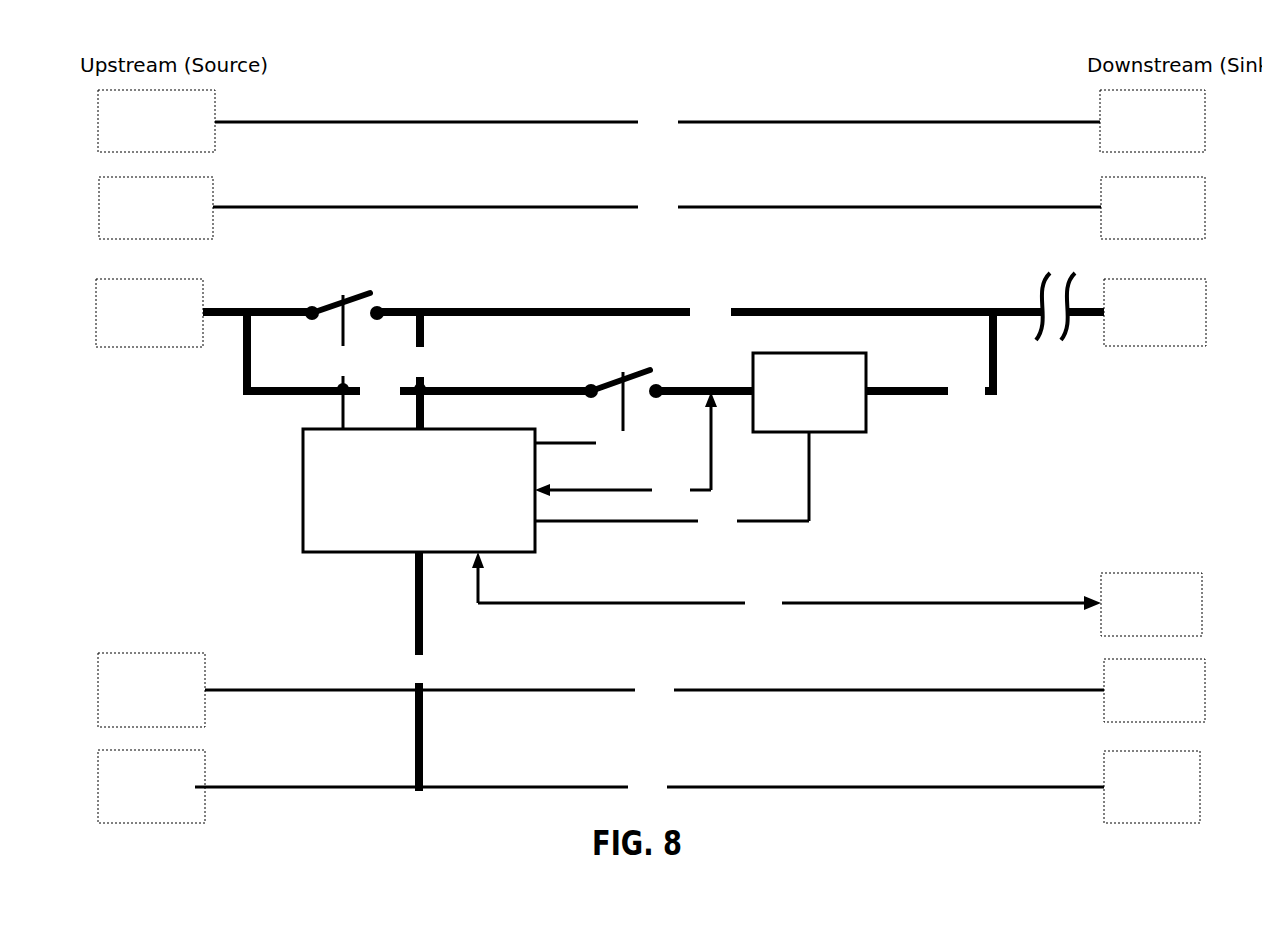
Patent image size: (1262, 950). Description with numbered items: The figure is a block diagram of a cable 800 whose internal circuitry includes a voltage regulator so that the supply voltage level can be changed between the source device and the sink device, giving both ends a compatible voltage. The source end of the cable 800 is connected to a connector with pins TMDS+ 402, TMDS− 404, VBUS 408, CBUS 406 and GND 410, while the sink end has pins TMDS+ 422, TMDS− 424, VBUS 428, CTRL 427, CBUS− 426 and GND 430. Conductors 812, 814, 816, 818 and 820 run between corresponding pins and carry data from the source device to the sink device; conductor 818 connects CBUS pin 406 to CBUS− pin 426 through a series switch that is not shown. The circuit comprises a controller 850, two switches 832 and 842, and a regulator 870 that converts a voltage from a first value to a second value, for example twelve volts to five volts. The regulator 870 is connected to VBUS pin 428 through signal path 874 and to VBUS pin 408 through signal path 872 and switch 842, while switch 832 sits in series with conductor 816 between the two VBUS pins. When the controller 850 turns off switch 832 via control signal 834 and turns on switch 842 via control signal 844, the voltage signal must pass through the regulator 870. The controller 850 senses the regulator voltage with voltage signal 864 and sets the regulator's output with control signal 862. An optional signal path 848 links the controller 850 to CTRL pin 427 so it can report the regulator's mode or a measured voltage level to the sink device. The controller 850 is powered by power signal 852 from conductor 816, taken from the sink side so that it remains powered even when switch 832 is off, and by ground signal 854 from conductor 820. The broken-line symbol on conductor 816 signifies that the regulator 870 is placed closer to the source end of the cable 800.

The cable 800 is at (1186, 14).
The TMDS+ pin 402 is at (156, 121).
The TMDS− pin 404 is at (156, 208).
The VBUS pin 408 is at (149, 313).
The CBUS pin 406 is at (151, 690).
The GND pin 410 is at (151, 786).
The TMDS+ pin 422 is at (1152, 121).
The TMDS− pin 424 is at (1153, 208).
The VBUS pin 428 is at (1155, 312).
The CTRL pin 427 is at (1151, 604).
The CBUS− pin 426 is at (1154, 690).
The GND pin 430 is at (1152, 787).
The conductor 812 is at (657, 122).
The conductor 814 is at (657, 207).
The conductor 816 is at (653, 306).
The conductor 818 is at (654, 690).
The conductor 820 is at (649, 787).
The switch 832 is at (344, 293).
The control signal 834 is at (345, 362).
The switch 842 is at (624, 370).
The control signal 844 is at (583, 414).
The signal path 848 is at (786, 584).
The controller 850 is at (419, 491).
The power signal 852 is at (419, 370).
The ground signal 854 is at (420, 671).
The control signal 862 is at (672, 483).
The voltage signal 864 is at (626, 447).
The regulator 870 is at (761, 392).
The signal path 872 is at (417, 356).
The signal path 874 is at (931, 358).